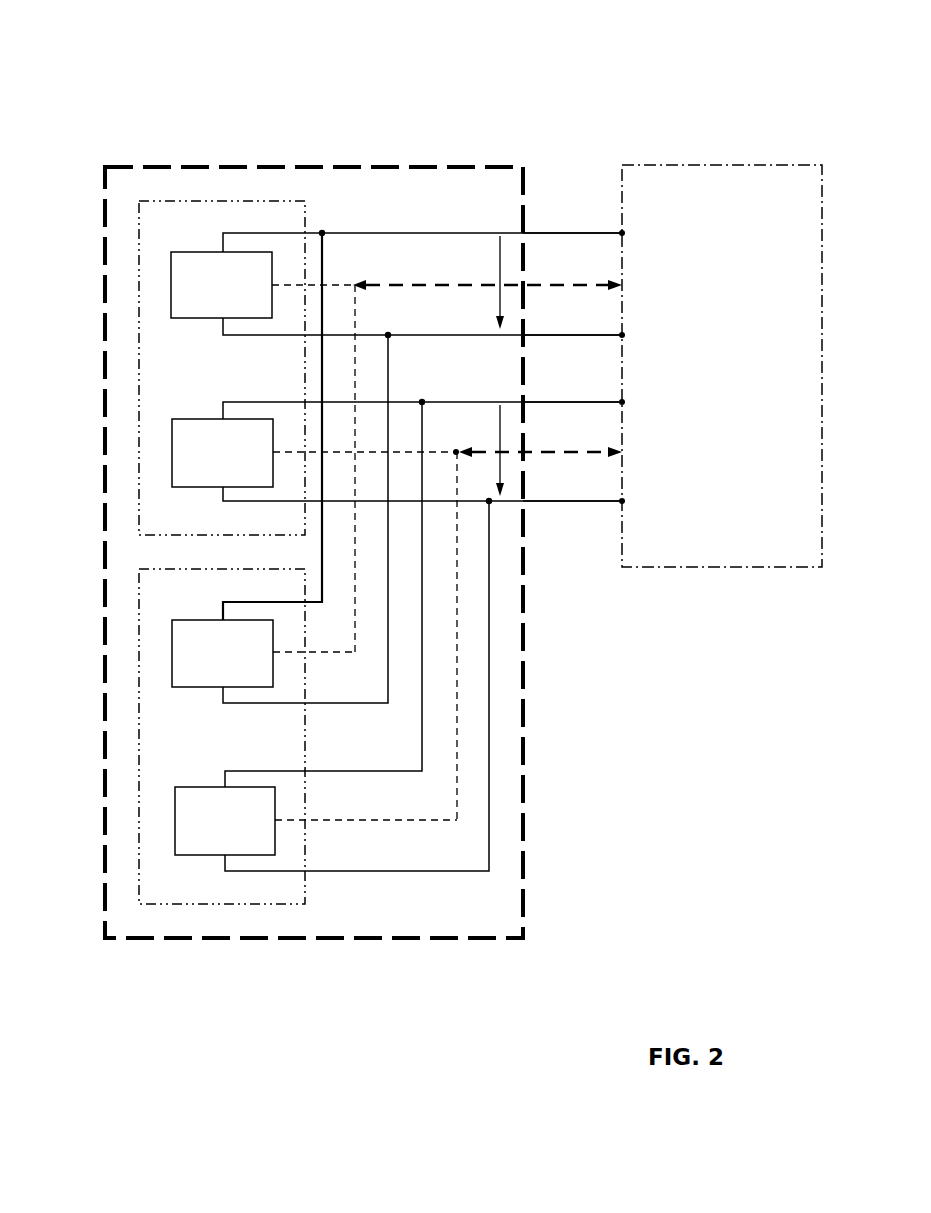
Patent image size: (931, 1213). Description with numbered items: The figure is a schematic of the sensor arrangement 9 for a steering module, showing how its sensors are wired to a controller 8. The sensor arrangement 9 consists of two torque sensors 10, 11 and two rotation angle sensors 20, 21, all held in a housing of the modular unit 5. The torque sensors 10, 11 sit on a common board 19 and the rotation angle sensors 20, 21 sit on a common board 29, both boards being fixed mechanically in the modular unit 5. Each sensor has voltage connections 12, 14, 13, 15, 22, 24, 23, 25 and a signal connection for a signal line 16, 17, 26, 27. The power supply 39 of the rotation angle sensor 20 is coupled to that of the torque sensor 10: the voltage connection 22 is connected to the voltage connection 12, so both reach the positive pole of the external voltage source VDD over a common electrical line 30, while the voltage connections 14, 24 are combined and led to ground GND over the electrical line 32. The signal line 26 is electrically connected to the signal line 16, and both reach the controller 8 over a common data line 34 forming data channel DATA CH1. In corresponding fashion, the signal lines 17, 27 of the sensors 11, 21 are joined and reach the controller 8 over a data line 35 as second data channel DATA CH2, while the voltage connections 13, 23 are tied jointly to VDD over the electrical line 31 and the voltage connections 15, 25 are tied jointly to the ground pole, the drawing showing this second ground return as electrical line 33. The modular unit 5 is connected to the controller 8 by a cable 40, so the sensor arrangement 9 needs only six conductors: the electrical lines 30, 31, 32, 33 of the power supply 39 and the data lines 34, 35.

The modular unit 5 is at (268, 167).
The controller 8 is at (752, 213).
The sensor arrangement 9 is at (110, 182).
The torque sensor 10 is at (221, 285).
The torque sensor 11 is at (222, 453).
The voltage connection 12 is at (222, 249).
The voltage connection 13 is at (222, 417).
The voltage connection 14 is at (222, 321).
The voltage connection 15 is at (222, 489).
The signal line 16 is at (342, 276).
The signal line 17 is at (333, 443).
The common board 19 is at (153, 320).
The rotation angle sensor 20 is at (222, 653).
The rotation angle sensor 21 is at (225, 821).
The voltage connection 22 is at (222, 618).
The voltage connection 23 is at (224, 785).
The voltage connection 24 is at (222, 689).
The voltage connection 25 is at (224, 857).
The signal line 26 is at (325, 651).
The signal line 27 is at (333, 819).
The common board 29 is at (155, 818).
The electrical line 30 is at (556, 233).
The electrical line 31 is at (556, 402).
The electrical line 32 is at (556, 335).
The electrical line 33 is at (556, 501).
The data line 34 is at (560, 285).
The data line 35 is at (560, 452).
The power supply 39 is at (500, 267).
The cable 40 is at (536, 186).